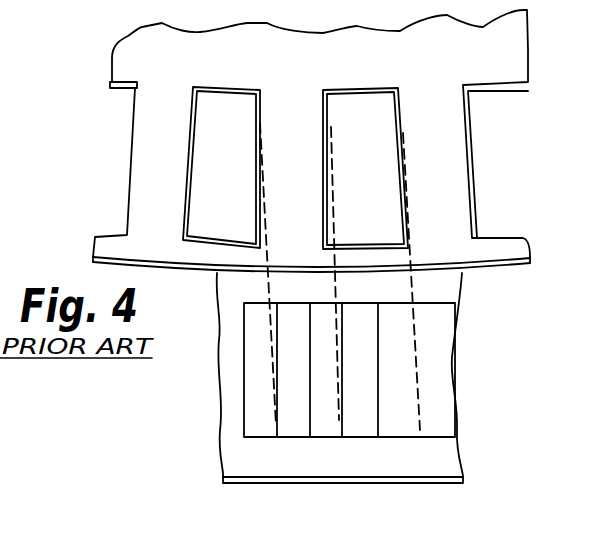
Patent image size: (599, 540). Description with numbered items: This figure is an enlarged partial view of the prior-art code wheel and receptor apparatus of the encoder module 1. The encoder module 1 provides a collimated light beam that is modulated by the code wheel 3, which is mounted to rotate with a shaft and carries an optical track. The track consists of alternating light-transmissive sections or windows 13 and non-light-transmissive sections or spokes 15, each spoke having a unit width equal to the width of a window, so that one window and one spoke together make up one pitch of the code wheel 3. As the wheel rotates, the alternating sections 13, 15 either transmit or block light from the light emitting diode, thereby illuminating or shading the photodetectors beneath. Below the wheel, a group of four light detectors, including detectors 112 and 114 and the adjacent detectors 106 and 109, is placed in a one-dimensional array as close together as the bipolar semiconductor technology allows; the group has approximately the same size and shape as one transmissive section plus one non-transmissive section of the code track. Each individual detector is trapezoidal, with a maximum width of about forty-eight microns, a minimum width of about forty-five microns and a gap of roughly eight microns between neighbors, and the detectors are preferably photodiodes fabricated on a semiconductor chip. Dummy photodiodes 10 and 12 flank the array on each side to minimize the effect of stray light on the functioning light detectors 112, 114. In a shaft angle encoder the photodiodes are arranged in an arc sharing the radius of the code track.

The encoder module 1 is at (242, 455).
The code wheel 3 is at (163, 270).
The dummy photodiode 10 is at (257, 353).
The dummy photodiode 12 is at (442, 405).
The light-transmissive section (window) 13 is at (347, 128).
The non-light-transmissive section (spoke) 15 is at (437, 113).
The compartment 106 is at (360, 430).
The compartment 109 is at (318, 423).
The light detector 112 is at (294, 426).
The light detector 114 is at (402, 428).